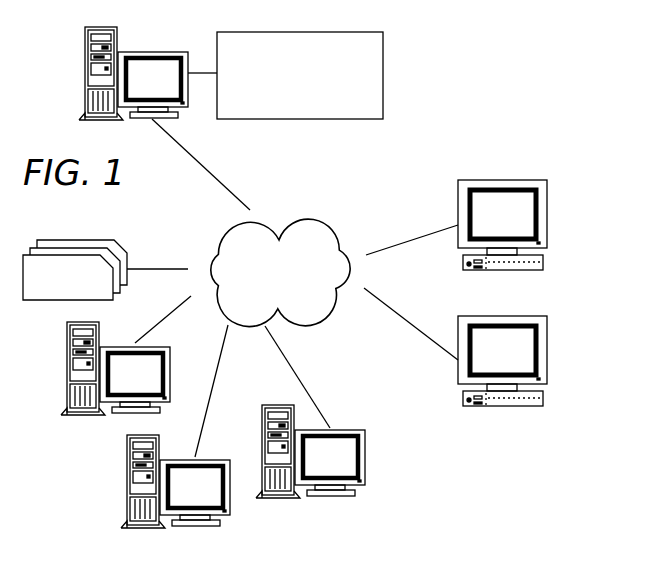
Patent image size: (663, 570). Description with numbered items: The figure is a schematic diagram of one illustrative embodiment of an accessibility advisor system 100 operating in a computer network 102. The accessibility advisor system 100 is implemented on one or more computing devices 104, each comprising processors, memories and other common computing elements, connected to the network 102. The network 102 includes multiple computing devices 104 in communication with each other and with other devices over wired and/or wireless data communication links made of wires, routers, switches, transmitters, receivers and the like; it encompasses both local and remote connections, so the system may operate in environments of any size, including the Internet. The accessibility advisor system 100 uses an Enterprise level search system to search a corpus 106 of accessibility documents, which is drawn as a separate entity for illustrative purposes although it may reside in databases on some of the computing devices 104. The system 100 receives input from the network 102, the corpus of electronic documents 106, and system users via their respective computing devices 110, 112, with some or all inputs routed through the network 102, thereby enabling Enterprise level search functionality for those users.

The accessibility advisor system 100 is at (383, 46).
The computer network 102 is at (308, 209).
The computing devices 104 is at (85, 55).
The corpus of accessibility documents 106 is at (61, 239).
The system user computing device 110 is at (547, 199).
The system user computing device 112 is at (547, 334).